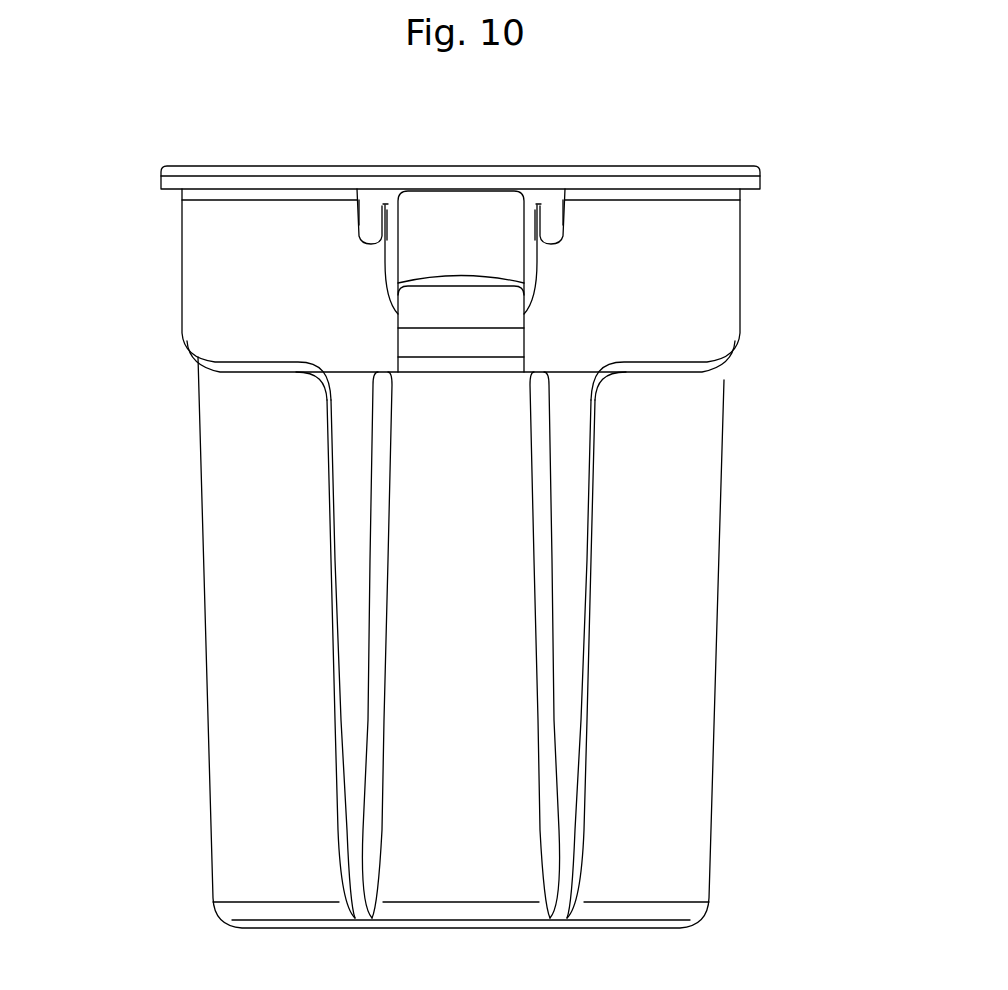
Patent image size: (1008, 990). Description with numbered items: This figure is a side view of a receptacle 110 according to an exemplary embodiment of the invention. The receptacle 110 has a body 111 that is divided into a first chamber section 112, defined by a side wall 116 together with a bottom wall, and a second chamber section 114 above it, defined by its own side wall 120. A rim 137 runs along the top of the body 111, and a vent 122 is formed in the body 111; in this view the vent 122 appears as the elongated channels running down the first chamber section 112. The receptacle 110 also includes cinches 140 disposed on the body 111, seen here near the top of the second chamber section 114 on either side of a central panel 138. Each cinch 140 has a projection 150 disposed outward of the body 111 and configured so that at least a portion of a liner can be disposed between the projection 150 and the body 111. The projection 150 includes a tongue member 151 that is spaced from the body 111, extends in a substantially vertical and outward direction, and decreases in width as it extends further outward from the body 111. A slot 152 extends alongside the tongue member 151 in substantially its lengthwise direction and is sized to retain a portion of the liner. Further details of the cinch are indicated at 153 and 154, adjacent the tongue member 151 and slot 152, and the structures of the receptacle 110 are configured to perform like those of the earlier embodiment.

The receptacle 110 is at (821, 135).
The body 111 is at (703, 568).
The first chamber section 112 is at (153, 653).
The second chamber section 114 is at (146, 282).
The side wall 116 is at (695, 830).
The side wall 120 is at (725, 268).
The vent 122 is at (350, 688).
The rim 137 is at (622, 166).
The central panel 138 is at (462, 347).
The cinch 140 is at (320, 261).
The projection 150 is at (375, 242).
The tongue member 151 is at (363, 213).
The slot 152 is at (390, 228).
The guide rib 153 is at (386, 248).
The tab tip 154 is at (390, 206).